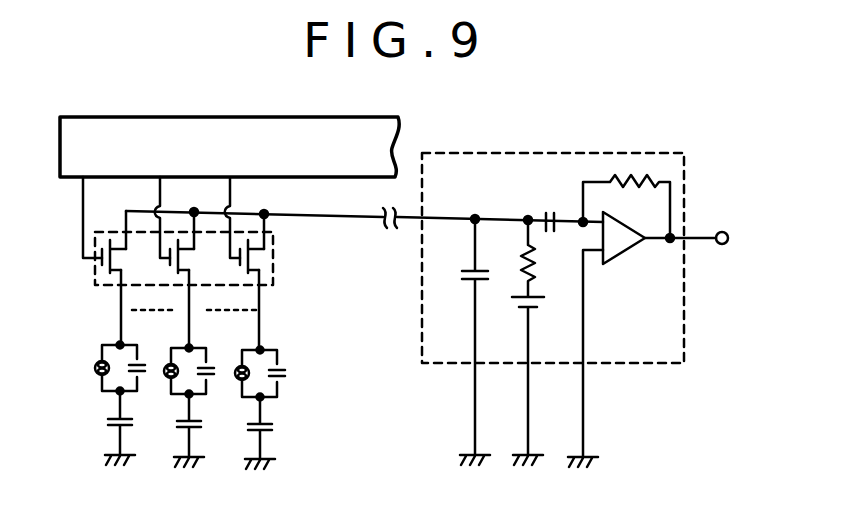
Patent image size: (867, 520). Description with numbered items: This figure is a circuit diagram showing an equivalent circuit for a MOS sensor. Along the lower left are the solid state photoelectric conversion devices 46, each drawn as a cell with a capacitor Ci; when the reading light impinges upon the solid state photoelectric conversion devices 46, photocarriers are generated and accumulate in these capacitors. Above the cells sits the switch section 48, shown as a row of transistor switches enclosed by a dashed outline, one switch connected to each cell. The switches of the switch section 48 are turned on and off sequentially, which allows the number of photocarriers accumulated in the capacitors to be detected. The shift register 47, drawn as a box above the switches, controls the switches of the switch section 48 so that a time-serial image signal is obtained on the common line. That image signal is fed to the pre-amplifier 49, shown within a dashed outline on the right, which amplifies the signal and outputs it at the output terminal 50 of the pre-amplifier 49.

The solid state photoelectric conversion device 46 is at (90, 401).
The shift register 47 is at (72, 175).
The switch section 48 is at (96, 271).
The pre-amplifier 49 is at (628, 363).
The output terminal 50 is at (729, 236).